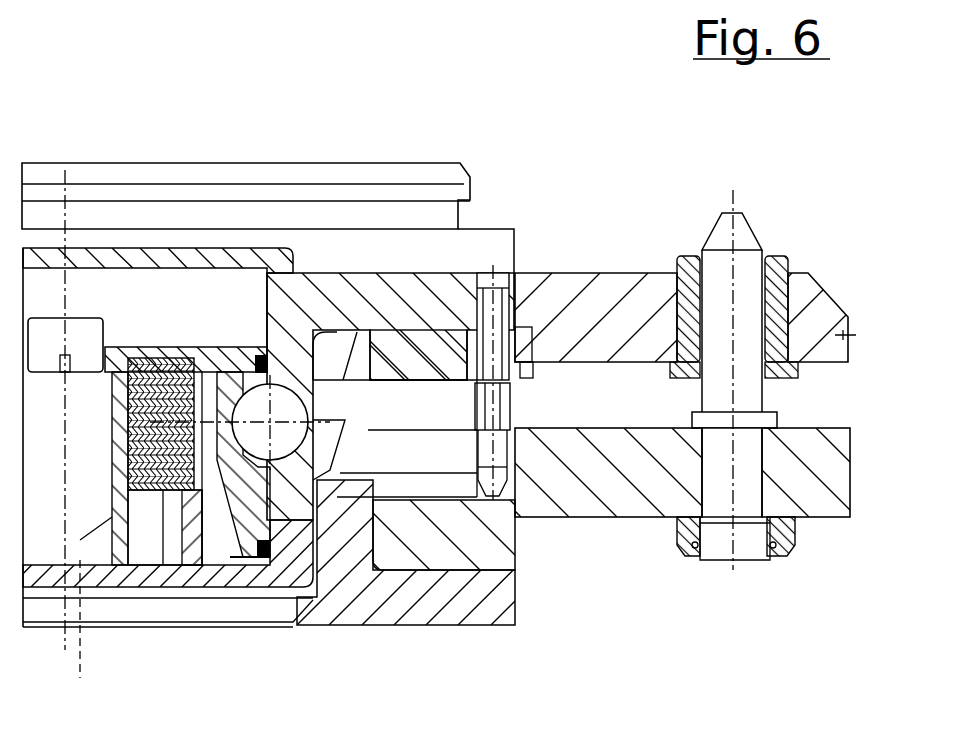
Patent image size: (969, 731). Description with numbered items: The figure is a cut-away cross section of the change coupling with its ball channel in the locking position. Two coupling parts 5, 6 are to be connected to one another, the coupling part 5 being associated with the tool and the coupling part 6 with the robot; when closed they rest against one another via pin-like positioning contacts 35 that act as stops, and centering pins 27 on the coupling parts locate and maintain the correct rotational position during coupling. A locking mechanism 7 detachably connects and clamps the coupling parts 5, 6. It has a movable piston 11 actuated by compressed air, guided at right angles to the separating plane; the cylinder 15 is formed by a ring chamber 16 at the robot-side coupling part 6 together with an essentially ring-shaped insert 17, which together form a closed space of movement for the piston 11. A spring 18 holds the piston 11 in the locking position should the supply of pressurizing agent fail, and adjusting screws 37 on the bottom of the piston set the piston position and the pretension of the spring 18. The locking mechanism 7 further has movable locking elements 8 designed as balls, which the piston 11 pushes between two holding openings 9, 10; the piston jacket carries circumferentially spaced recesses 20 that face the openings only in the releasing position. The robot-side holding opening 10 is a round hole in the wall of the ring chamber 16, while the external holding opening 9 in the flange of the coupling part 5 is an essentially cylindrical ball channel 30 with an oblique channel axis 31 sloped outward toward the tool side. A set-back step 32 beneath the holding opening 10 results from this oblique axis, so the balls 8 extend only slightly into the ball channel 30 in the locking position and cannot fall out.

The coupling part 5 is at (628, 500).
The coupling part 6 is at (600, 296).
The locking mechanism 7 is at (123, 143).
The locking elements 8 is at (240, 249).
The holding opening 9 is at (367, 274).
The holding opening 10 is at (337, 254).
The piston 11 is at (67, 590).
The cylinder 15 is at (153, 248).
The ring chamber 16 is at (205, 305).
The insert 17 is at (125, 570).
The spring 18 is at (163, 565).
The recesses 20 is at (227, 460).
The centering pins 27 is at (748, 240).
The ball channel 30 is at (402, 355).
The channel axis 31 is at (395, 405).
The step 32 is at (407, 438).
The positioning contacts 35 is at (505, 403).
The adjusting screws 37 is at (86, 333).